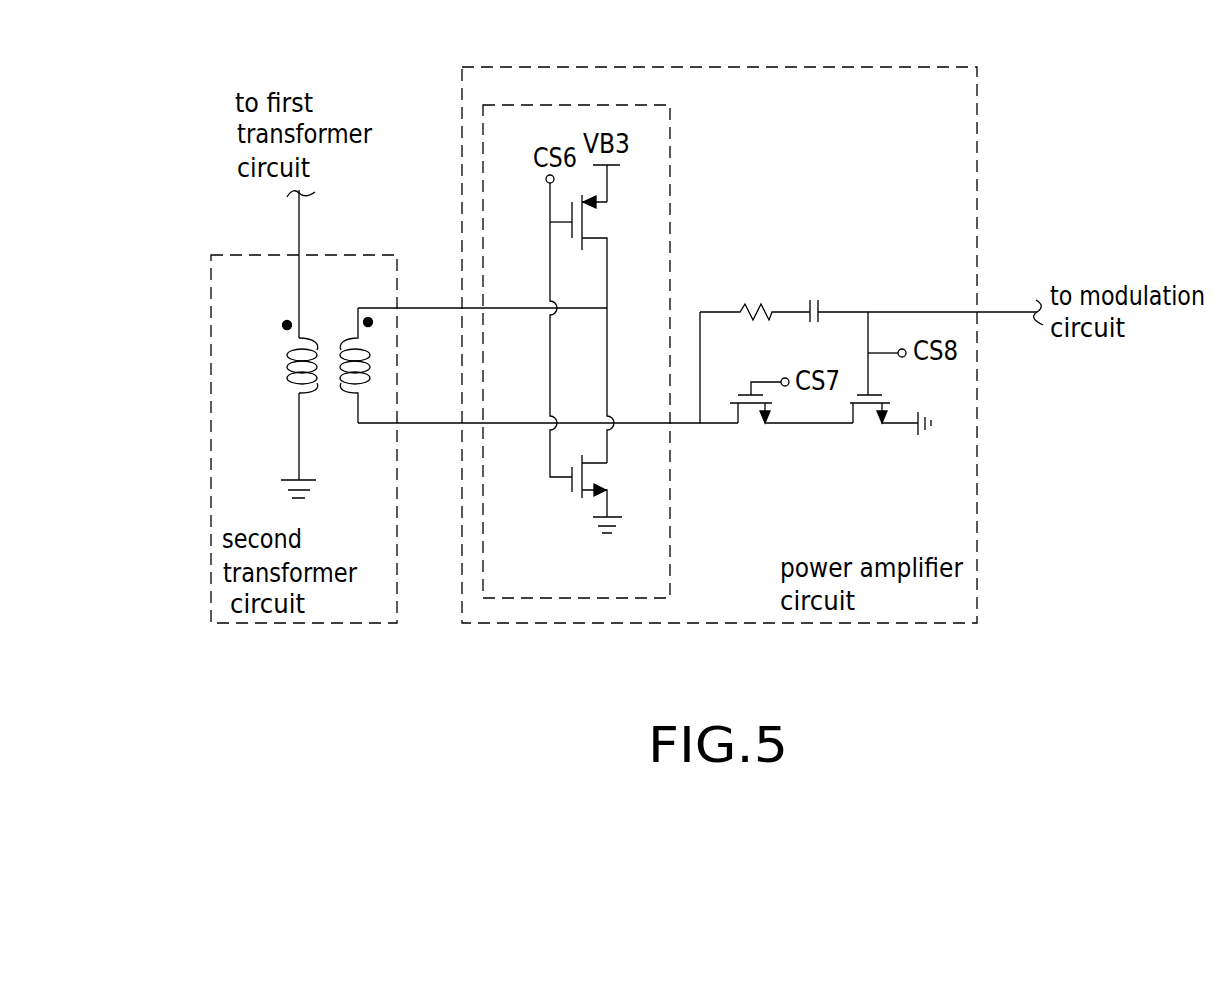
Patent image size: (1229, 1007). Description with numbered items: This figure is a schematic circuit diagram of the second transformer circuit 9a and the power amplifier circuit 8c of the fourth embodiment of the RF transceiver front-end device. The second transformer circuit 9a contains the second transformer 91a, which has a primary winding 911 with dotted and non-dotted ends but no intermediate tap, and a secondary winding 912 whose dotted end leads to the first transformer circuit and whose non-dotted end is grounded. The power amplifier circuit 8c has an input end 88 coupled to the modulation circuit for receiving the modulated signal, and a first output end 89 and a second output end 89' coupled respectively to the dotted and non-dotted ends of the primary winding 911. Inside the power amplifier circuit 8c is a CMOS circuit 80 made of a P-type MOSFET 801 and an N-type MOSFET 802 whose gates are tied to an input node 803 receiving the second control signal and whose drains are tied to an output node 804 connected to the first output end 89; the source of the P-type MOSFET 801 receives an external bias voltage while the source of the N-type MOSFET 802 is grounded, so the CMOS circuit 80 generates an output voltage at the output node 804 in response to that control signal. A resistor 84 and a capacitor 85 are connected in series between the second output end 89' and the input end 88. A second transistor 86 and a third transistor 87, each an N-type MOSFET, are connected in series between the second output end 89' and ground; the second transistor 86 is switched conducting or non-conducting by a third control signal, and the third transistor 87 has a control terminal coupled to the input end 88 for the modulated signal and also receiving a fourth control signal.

The power amplifier circuit 8c is at (772, 67).
The CMOS circuit 80 is at (670, 195).
The second transformer circuit 9a is at (327, 255).
The primary winding 911 is at (372, 340).
The secondary winding 912 is at (287, 367).
The second transformer 91a is at (328, 392).
The first output end 89 is at (482, 227).
The second output end 89' is at (529, 428).
The input node 803 is at (550, 197).
The P-type MOSFET 801 is at (605, 220).
The output node 804 is at (577, 310).
The N-type MOSFET 802 is at (608, 477).
The resistor 84 is at (753, 302).
The capacitor 85 is at (823, 307).
The second transistor 86 is at (750, 422).
The third transistor 87 is at (867, 422).
The input end 88 is at (1002, 312).